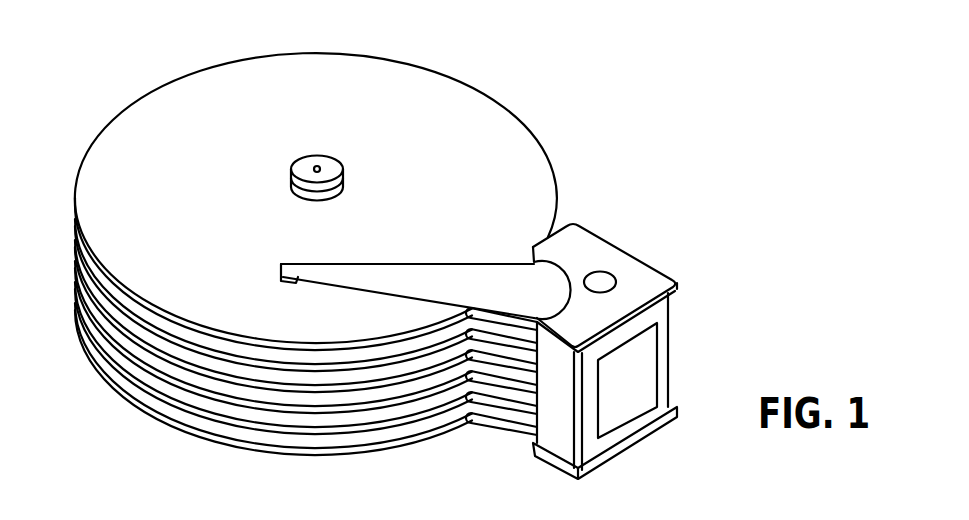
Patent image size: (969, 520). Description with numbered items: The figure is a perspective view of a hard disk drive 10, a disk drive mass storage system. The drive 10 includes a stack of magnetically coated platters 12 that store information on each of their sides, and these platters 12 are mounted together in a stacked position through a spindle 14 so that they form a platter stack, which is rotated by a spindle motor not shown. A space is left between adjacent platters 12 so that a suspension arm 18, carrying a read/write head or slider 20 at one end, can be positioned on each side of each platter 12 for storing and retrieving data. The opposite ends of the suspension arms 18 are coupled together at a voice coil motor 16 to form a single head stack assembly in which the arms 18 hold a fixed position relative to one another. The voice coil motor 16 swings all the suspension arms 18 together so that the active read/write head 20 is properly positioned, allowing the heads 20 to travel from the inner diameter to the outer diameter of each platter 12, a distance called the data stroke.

The drive 10 is at (603, 109).
The magnetically coated platters 12 is at (62, 187).
The spindle 14 is at (312, 160).
The voice coil motor 16 is at (634, 270).
The suspension arm 18 is at (432, 276).
The read/write head or slider 20 is at (282, 274).